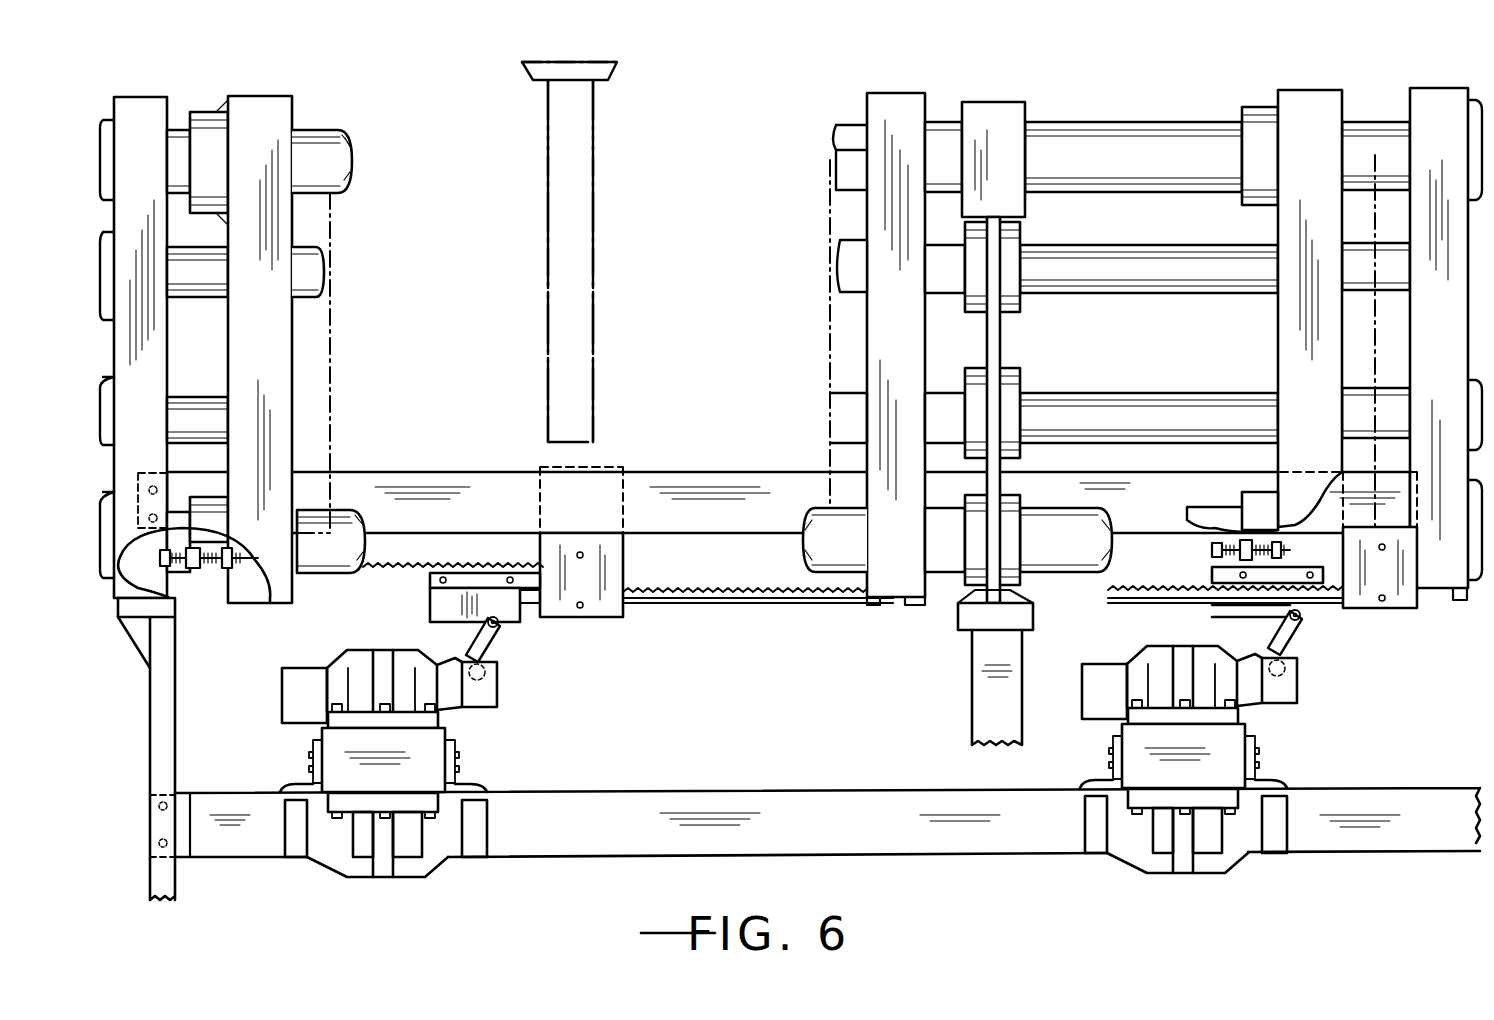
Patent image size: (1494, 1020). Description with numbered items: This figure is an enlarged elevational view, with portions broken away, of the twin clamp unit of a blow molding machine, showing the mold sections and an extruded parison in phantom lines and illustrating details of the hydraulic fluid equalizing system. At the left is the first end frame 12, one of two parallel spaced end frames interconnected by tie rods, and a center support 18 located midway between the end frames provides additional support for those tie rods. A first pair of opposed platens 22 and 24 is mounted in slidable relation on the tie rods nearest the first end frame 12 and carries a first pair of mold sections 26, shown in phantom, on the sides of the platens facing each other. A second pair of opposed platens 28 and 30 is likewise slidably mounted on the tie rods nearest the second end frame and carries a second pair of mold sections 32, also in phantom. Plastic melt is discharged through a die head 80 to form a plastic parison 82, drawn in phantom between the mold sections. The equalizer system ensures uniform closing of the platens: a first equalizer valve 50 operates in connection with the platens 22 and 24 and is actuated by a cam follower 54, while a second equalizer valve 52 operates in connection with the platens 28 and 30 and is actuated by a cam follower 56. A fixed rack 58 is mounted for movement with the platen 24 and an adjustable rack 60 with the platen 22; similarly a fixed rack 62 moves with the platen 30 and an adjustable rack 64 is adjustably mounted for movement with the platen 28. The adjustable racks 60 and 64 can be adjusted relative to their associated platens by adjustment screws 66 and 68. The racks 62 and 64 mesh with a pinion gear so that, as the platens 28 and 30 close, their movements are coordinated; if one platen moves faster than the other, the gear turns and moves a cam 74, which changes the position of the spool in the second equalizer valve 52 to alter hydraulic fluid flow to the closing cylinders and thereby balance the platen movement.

The first end frame 12 is at (148, 97).
The center support 18 is at (972, 658).
The platen 22 is at (285, 96).
The platen 24 is at (868, 93).
The first pair of mold sections 26 is at (335, 380).
The platen 28 is at (1296, 90).
The platen 30 is at (1428, 88).
The second pair of mold sections 32 is at (1392, 150).
The first equalizer valve 50 is at (445, 708).
The second equalizer valve 52 is at (1245, 704).
The cam follower 54 is at (500, 630).
The cam follower 56 is at (1302, 626).
The fixed rack 58 is at (645, 592).
The adjustable rack 60 is at (392, 572).
The fixed rack 62 is at (1108, 592).
The adjustable rack 64 is at (1297, 560).
The adjustment screw 66 is at (180, 567).
The adjustment screw 68 is at (1212, 550).
The cam 74 is at (1215, 603).
The die head 80 is at (612, 70).
The plastic parison 82 is at (593, 280).